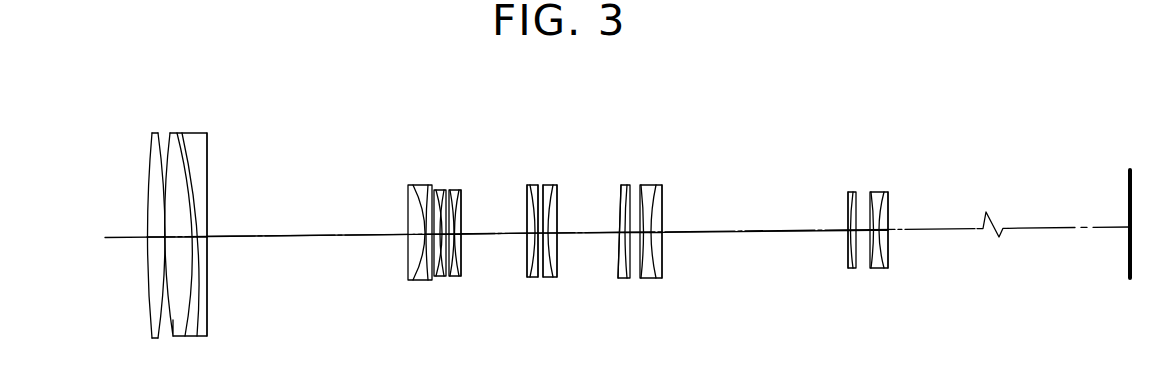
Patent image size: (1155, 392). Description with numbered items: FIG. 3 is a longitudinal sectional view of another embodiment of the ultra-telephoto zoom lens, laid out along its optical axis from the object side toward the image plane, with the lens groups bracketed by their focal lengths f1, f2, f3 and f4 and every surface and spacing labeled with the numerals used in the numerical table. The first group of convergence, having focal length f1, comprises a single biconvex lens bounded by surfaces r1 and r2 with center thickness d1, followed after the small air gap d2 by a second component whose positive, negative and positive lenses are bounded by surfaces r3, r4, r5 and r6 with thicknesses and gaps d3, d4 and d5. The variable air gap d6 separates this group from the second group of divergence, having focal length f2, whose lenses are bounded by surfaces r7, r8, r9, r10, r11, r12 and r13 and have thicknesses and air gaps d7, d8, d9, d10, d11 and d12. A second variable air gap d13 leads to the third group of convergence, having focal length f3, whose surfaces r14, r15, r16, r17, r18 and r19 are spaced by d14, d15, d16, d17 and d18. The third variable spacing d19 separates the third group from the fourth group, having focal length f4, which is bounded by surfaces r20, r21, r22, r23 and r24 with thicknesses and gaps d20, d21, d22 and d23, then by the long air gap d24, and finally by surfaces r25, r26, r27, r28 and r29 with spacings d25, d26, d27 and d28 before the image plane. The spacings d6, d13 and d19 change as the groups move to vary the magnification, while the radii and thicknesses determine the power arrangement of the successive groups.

The focal length of first lens group f1 is at (218, 90).
The focal length of second lens group f2 is at (468, 87).
The focal length of third lens group f3 is at (572, 85).
The focal length of fourth lens group f4 is at (597, 82).
The radius of curvature r1 is at (151, 322).
The radius of curvature r2 is at (158, 326).
The radius of curvature r3 is at (173, 322).
The radius of curvature r4 is at (185, 336).
The radius of curvature r5 is at (197, 336).
The radius of curvature r6 is at (207, 322).
The radius of curvature r7 is at (408, 274).
The radius of curvature r8 is at (420, 278).
The radius of curvature r9 is at (430, 280).
The radius of curvature r10 is at (437, 277).
The radius of curvature r11 is at (446, 277).
The radius of curvature r12 is at (455, 277).
The radius of curvature r13 is at (462, 276).
The radius of curvature r14 is at (527, 270).
The radius of curvature r15 is at (532, 278).
The radius of curvature r16 is at (539, 278).
The radius of curvature r17 is at (546, 278).
The radius of curvature r18 is at (555, 278).
The radius of curvature r19 is at (558, 268).
The radius of curvature r20 is at (619, 280).
The radius of curvature r21 is at (629, 280).
The radius of curvature r22 is at (642, 280).
The radius of curvature r23 is at (655, 280).
The radius of curvature r24 is at (663, 279).
The radius of curvature r25 is at (849, 270).
The radius of curvature r26 is at (855, 270).
The radius of curvature r27 is at (872, 270).
The radius of curvature r28 is at (883, 270).
The radius of curvature r29 is at (889, 270).
The center thickness d1 is at (157, 236).
The air gap d2 is at (163, 238).
The center thickness d3 is at (178, 224).
The center thickness d4 is at (199, 234).
The center thickness d5 is at (200, 238).
The variable air gap d6 is at (307, 225).
The center thickness d7 is at (423, 233).
The air gap d8 is at (427, 236).
The center thickness d9 is at (435, 232).
The air gap d10 is at (441, 233).
The center thickness d11 is at (446, 236).
The air gap d12 is at (450, 237).
The variable air gap d13 is at (529, 234).
The center thickness d14 is at (533, 232).
The center thickness d15 is at (535, 236).
The air gap d16 is at (542, 232).
The center thickness d17 is at (547, 233).
The center thickness d18 is at (550, 236).
The variable air gap d19 is at (624, 232).
The center thickness d20 is at (626, 235).
The air gap d21 is at (645, 231).
The center thickness d22 is at (650, 232).
The air gap d23 is at (654, 236).
The air gap d24 is at (755, 220).
The center thickness d25 is at (851, 229).
The air gap d26 is at (857, 233).
The center thickness d27 is at (880, 229).
The center thickness d28 is at (883, 233).